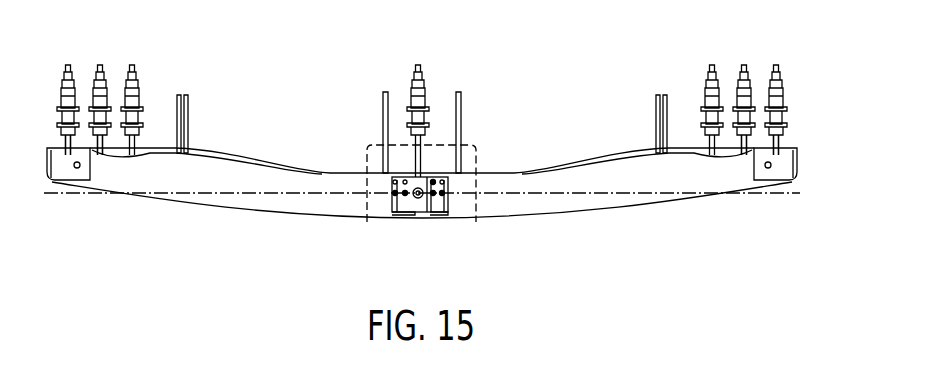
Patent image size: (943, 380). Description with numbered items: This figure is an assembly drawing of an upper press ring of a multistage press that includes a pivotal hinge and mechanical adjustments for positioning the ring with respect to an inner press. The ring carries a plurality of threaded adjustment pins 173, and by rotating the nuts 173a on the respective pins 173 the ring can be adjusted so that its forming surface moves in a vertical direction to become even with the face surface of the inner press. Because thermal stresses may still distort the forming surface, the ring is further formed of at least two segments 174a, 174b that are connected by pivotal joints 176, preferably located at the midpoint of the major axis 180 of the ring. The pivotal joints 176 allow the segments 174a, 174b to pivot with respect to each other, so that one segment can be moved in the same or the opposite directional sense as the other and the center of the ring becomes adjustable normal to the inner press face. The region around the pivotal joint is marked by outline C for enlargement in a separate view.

The threaded adjustment pins 173 is at (132, 65).
The nuts 173a is at (101, 143).
The segment 174a is at (313, 187).
The segment 174b is at (527, 188).
The pivotal joints 176 is at (399, 208).
The major axis 180 is at (784, 197).
The outline C is at (468, 205).